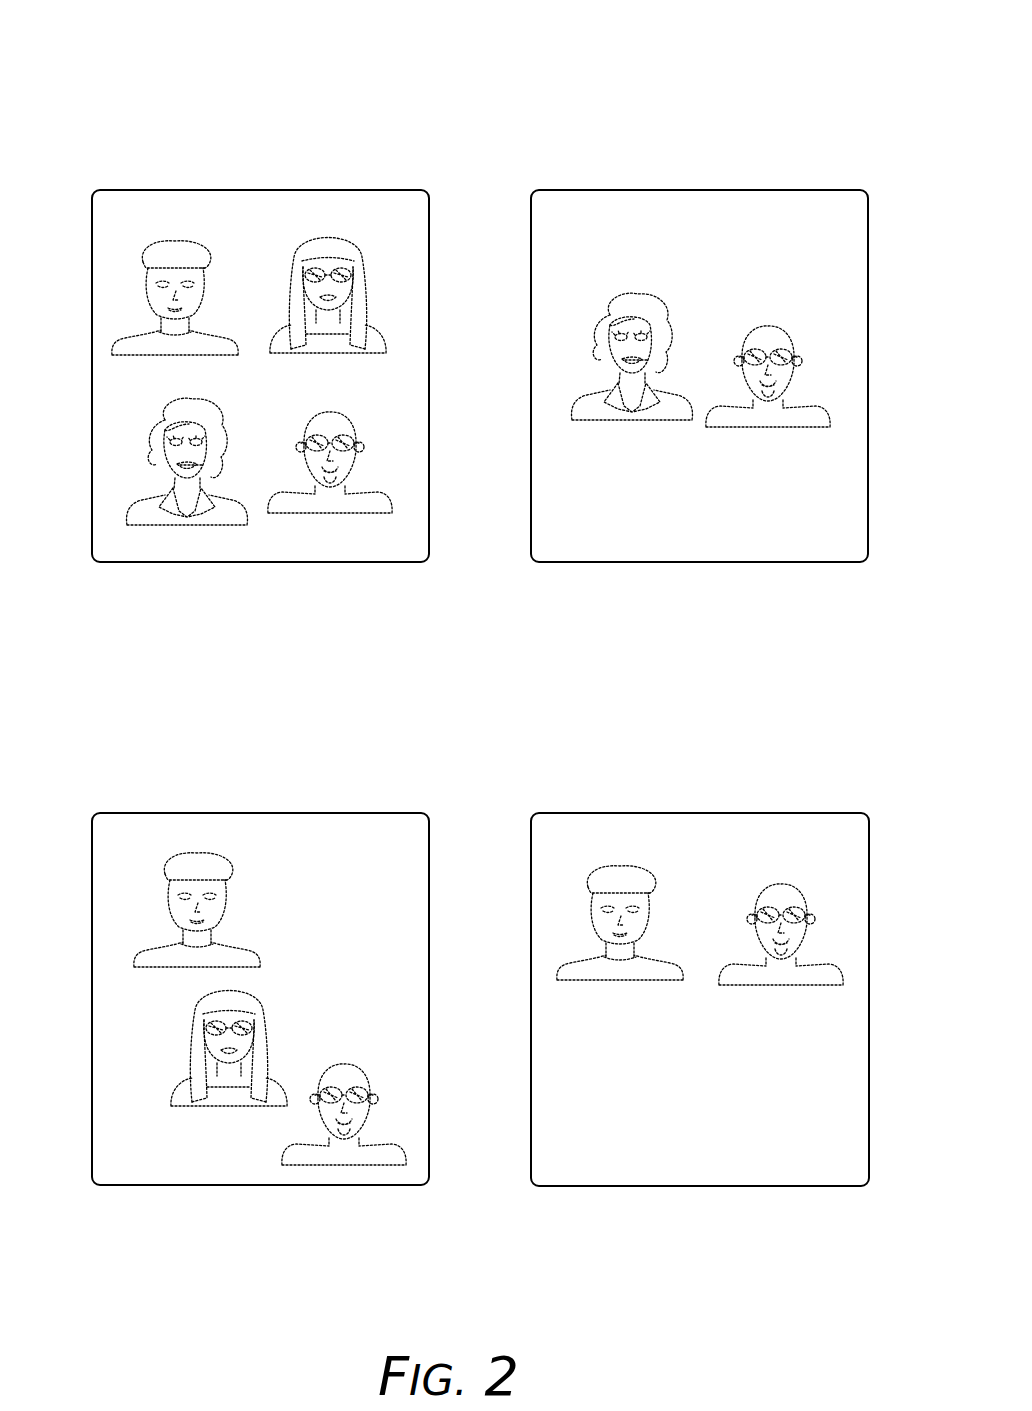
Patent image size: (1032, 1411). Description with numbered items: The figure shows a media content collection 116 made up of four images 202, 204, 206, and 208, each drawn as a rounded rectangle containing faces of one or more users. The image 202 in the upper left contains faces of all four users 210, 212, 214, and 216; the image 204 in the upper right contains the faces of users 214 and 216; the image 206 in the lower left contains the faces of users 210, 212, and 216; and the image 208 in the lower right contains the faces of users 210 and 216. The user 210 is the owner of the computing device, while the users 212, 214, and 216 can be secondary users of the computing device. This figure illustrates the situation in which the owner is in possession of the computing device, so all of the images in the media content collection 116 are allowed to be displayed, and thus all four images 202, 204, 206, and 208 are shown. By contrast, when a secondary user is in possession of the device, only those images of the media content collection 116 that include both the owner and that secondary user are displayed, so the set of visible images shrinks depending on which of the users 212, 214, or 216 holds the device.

The media content collection 116 is at (796, 78).
The image 202 is at (260, 190).
The image 204 is at (698, 190).
The image 206 is at (260, 813).
The image 208 is at (698, 813).
The user 210 is at (155, 308).
The user 212 is at (358, 280).
The user 214 is at (167, 465).
The user 216 is at (353, 430).